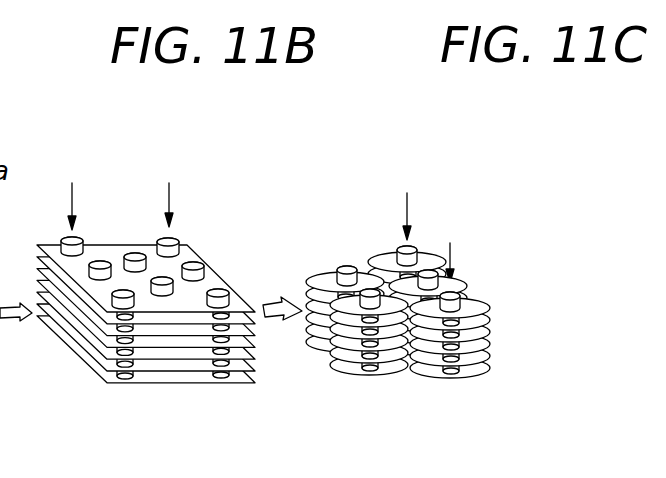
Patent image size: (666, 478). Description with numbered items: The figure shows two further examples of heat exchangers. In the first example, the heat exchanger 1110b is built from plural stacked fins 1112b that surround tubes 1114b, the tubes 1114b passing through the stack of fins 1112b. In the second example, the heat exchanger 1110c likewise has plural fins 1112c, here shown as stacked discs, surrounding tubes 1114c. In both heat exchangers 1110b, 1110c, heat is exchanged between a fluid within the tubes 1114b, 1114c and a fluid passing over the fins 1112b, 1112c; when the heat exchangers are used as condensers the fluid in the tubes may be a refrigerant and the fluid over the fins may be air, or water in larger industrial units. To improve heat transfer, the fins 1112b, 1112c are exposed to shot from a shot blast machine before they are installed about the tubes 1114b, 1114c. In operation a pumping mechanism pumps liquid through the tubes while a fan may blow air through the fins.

In FIG. 11B, the heat exchanger 1110b is at (127, 198).
In FIG. 11B, the fins 1112b is at (240, 365).
In FIG. 11B, the tubes 1114b is at (188, 250).
In FIG. 11C, the heat exchanger 1110c is at (448, 226).
In FIG. 11C, the fins 1112c is at (490, 343).
In FIG. 11C, the tubes 1114c is at (466, 297).